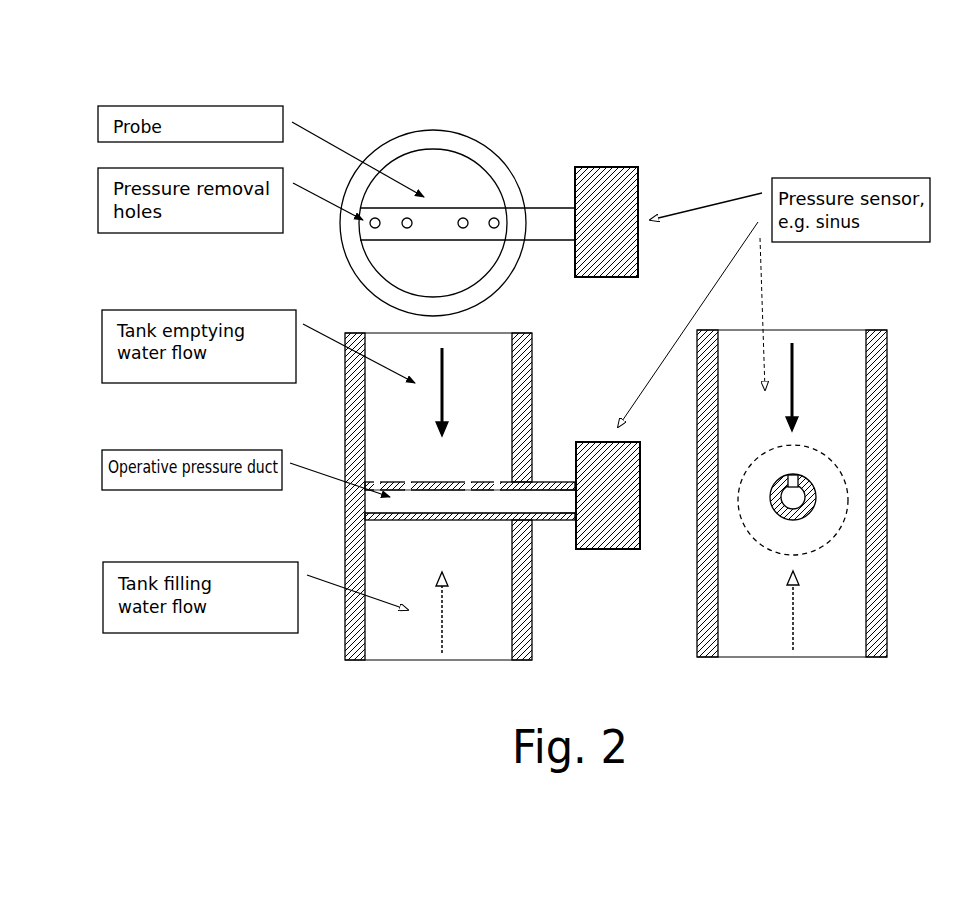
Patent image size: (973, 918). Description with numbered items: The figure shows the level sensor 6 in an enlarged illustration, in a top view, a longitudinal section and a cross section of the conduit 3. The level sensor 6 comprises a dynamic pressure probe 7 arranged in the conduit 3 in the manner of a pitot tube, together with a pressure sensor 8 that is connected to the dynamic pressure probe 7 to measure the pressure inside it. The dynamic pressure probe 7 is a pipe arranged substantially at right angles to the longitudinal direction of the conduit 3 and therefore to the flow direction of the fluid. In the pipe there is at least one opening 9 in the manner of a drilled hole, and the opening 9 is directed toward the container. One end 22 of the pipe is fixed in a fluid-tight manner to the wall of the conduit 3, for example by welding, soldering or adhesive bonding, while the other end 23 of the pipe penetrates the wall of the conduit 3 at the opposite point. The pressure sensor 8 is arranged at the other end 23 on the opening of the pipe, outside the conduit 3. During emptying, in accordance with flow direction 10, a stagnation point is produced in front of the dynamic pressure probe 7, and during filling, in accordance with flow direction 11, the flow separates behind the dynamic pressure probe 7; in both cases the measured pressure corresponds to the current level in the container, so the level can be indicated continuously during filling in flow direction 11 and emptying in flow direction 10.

The conduit 3 is at (437, 138).
The level sensor 6 is at (590, 115).
The dynamic pressure probe 7 is at (460, 207).
The pressure sensor 8 is at (622, 187).
The opening 9 is at (407, 223).
The flow direction for emptying 10 is at (425, 403).
The flow direction for filling 11 is at (430, 628).
The one end of the pipe 22 is at (360, 503).
The other end of the pipe 23 is at (577, 503).